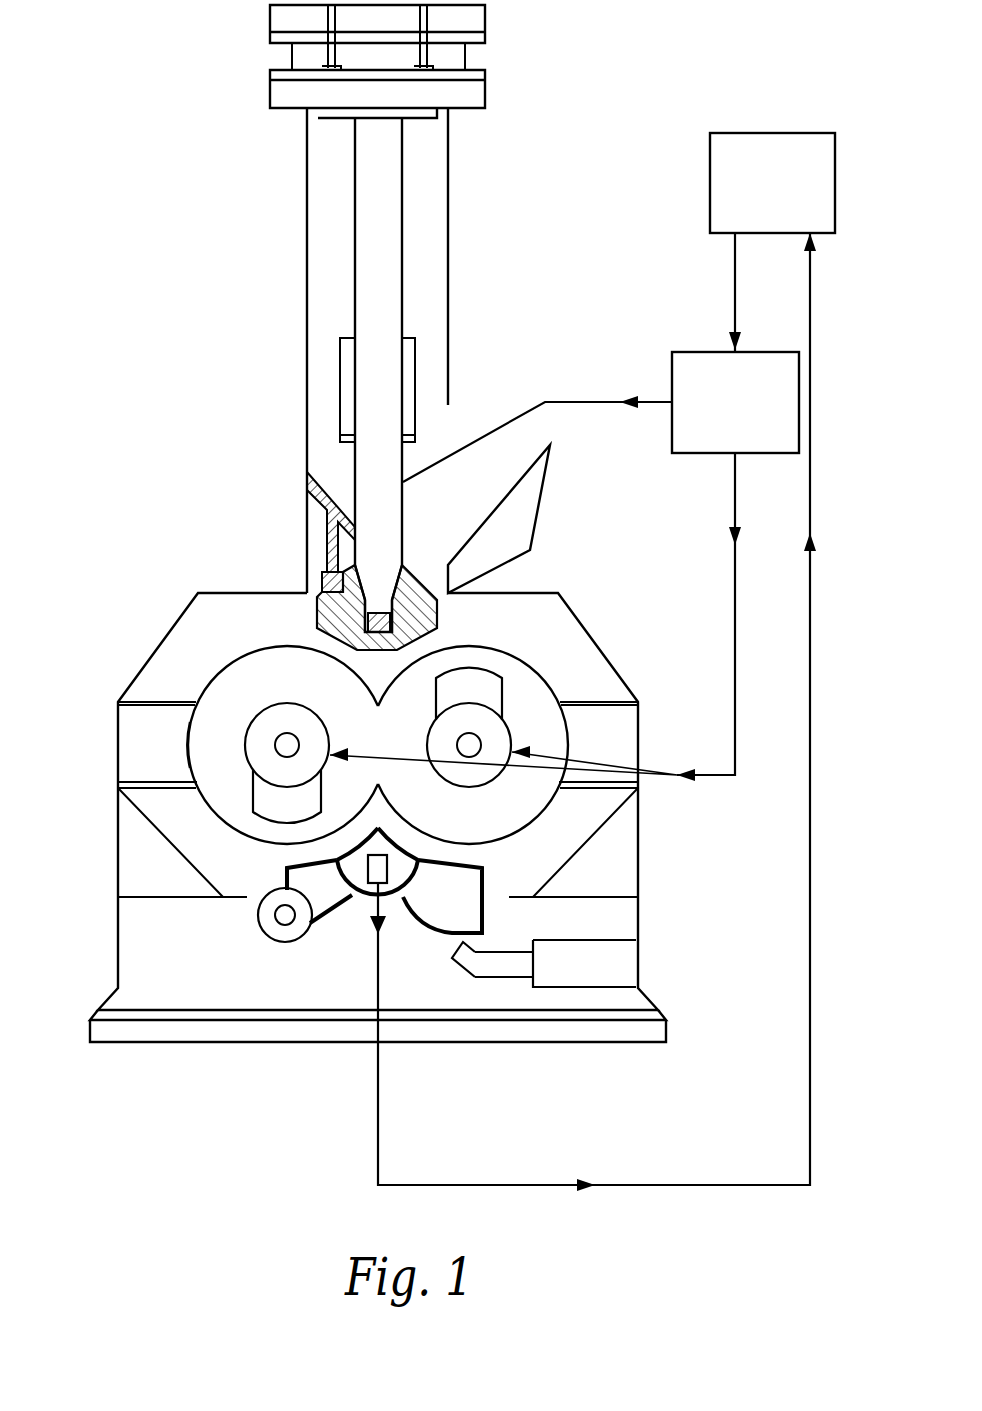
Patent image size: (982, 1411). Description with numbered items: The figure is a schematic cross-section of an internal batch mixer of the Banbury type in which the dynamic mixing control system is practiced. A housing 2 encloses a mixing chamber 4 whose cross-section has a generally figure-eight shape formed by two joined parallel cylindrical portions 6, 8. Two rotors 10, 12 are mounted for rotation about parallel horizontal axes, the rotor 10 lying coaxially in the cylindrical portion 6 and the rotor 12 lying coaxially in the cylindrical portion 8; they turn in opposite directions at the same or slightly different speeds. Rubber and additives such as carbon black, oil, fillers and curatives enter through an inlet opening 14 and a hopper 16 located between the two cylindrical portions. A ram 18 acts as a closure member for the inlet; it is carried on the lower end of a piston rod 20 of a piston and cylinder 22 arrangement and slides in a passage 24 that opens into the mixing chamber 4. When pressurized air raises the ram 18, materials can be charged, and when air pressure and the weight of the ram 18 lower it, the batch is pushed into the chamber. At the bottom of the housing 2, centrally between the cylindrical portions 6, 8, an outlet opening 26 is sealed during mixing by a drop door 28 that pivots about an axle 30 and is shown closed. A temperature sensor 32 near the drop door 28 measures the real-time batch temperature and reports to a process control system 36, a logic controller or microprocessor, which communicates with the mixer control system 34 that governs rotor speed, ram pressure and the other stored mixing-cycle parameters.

The housing 2 is at (168, 632).
The mixing chamber 4 is at (232, 723).
The cylindrical portion 6 is at (192, 760).
The cylindrical portion 8 is at (493, 833).
The rotor 10 is at (250, 768).
The rotor 12 is at (512, 718).
The inlet opening 14 is at (450, 602).
The hopper 16 is at (553, 483).
The ram 18 is at (320, 590).
The piston rod 20 is at (380, 242).
The piston and cylinder arrangement 22 is at (262, 92).
The passage 24 is at (342, 312).
The outlet opening 26 is at (485, 853).
The drop door 28 is at (333, 912).
The axle 30 is at (260, 927).
The temperature sensor 32 is at (398, 872).
The mixer control system 34 is at (690, 352).
The process control system 36 is at (782, 132).